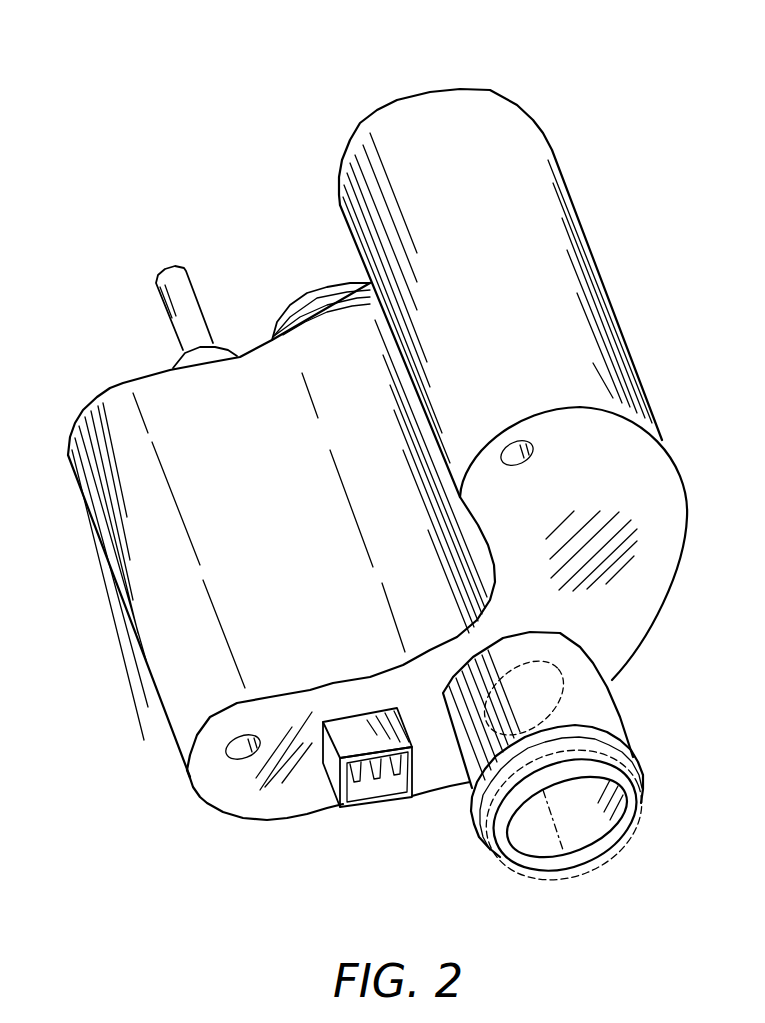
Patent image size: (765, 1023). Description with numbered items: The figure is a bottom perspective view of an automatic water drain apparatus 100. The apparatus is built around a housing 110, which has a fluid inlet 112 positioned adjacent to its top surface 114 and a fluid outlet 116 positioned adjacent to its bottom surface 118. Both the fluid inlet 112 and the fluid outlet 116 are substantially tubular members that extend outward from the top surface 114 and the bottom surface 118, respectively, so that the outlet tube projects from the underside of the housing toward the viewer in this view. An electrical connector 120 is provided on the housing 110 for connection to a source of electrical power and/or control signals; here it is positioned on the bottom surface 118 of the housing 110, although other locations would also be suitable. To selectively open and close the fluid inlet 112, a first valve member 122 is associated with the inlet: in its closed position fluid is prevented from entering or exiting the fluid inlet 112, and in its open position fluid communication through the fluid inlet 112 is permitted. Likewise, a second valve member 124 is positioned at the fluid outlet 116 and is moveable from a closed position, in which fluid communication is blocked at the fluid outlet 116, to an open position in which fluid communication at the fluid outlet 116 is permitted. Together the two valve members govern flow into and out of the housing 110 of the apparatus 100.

The automatic water drain apparatus 100 is at (98, 104).
The housing 110 is at (418, 92).
The fluid inlet 112 is at (268, 341).
The top surface 114 is at (122, 383).
The fluid outlet 116 is at (593, 706).
The bottom surface 118 is at (636, 614).
The electrical connector 120 is at (333, 790).
The first valve member 122 is at (303, 296).
The second valve member 124 is at (565, 690).